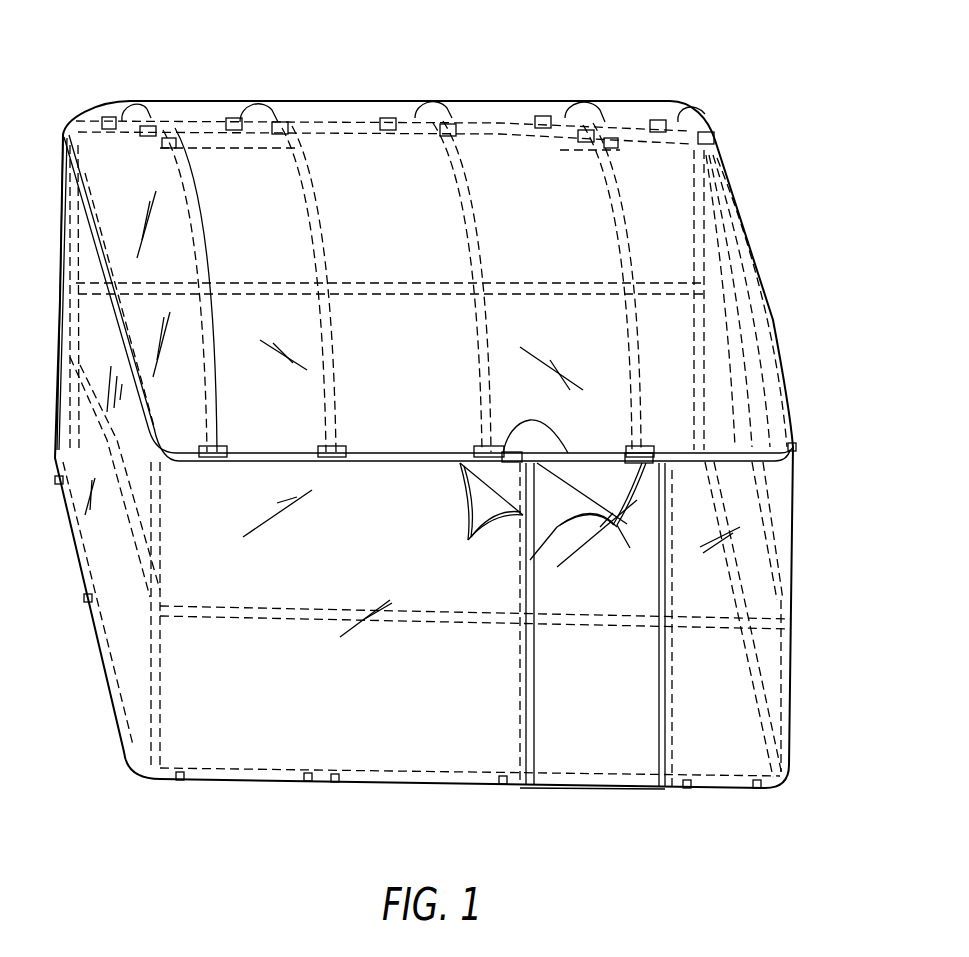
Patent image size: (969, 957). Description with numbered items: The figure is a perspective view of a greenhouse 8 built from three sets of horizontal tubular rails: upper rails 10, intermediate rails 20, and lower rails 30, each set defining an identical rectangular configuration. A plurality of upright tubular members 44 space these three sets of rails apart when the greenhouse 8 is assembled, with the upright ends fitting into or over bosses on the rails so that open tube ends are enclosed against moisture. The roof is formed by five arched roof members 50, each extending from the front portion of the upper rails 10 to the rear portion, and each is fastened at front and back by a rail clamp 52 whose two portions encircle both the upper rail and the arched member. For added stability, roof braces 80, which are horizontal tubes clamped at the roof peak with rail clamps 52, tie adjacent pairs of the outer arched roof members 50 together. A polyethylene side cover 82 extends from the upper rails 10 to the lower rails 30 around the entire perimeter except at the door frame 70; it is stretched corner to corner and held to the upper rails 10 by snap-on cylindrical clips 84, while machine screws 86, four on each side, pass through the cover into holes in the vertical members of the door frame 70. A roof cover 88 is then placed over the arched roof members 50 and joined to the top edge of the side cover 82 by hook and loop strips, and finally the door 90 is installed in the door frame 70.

The greenhouse 8 is at (102, 80).
The upper rails 10 is at (768, 347).
The intermediate rails 20 is at (778, 510).
The lower rails 30 is at (788, 765).
The upright tubular members 44 is at (66, 242).
The arched roof members 50 is at (150, 98).
The rail clamp 52 is at (112, 100).
The door frame 70 is at (553, 435).
The roof braces 80 is at (247, 147).
The side cover 82 is at (276, 712).
The clip 84 is at (57, 481).
The machine screw 86 is at (535, 482).
The roof cover 88 is at (147, 315).
The door 90 is at (578, 712).